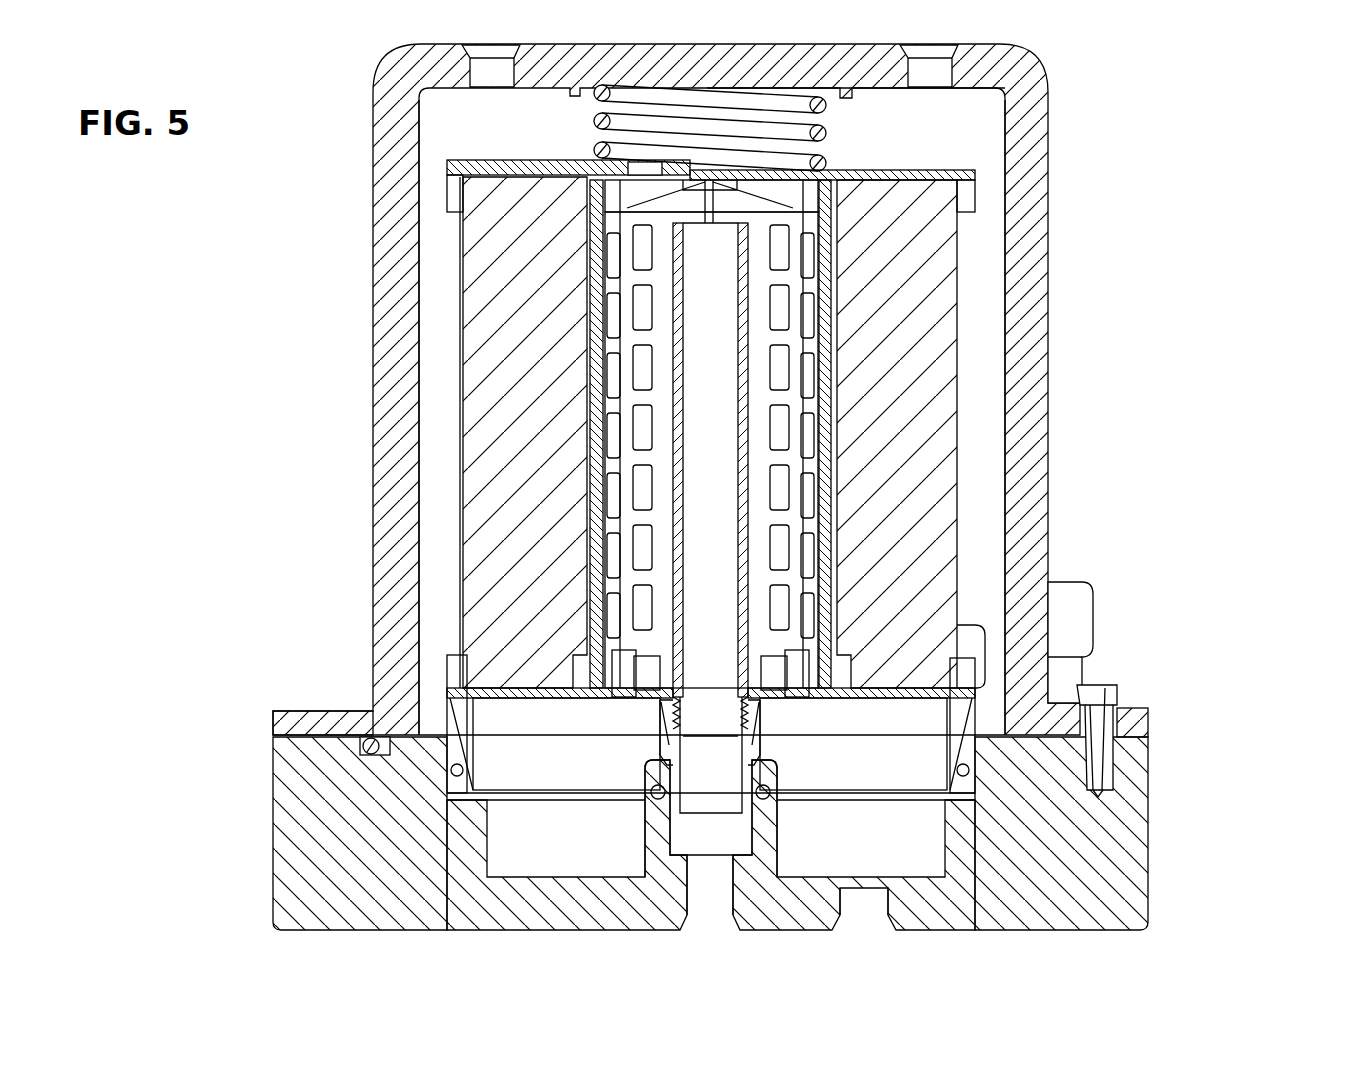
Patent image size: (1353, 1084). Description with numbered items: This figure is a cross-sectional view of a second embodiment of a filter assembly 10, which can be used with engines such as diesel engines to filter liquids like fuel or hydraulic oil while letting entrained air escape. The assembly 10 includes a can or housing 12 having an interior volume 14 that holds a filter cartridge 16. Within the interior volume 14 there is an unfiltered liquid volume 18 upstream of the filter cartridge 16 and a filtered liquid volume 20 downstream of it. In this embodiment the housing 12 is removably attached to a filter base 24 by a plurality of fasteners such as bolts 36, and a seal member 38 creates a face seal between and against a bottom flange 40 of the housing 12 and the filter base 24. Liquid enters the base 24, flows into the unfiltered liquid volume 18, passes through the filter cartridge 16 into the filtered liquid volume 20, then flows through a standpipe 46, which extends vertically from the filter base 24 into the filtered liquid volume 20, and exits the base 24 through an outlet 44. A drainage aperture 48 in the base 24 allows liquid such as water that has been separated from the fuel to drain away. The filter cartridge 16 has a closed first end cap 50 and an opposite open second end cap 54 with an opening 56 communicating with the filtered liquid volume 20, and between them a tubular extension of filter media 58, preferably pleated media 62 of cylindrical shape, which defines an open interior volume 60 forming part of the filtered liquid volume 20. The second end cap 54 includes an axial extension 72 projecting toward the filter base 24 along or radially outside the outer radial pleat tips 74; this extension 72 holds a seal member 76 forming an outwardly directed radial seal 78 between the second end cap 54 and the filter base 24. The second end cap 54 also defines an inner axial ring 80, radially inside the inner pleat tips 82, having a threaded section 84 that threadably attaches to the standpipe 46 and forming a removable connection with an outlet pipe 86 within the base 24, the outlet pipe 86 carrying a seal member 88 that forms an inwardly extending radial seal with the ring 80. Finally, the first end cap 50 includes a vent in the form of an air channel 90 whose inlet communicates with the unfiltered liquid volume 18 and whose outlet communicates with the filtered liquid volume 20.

The filter assembly 10 is at (1196, 126).
The housing 12 is at (375, 316).
The interior volume 14 is at (1000, 472).
The filter cartridge 16 is at (968, 156).
The unfiltered liquid volume 18 is at (428, 440).
The filtered liquid volume 20 is at (820, 396).
The filter base 24 is at (1132, 890).
The bolt 36 is at (1100, 742).
The seal member 38 is at (366, 745).
The bottom flange 40 is at (348, 711).
The outlet 44 is at (727, 930).
The standpipe 46 is at (690, 460).
The drainage aperture 48 is at (890, 930).
The first end cap 50 is at (873, 170).
The second end cap 54 is at (878, 698).
The opening 56 is at (683, 712).
The filter media 58 is at (480, 252).
The open interior volume 60 is at (820, 325).
The pleated media 62 is at (905, 568).
The axial extension 72 is at (957, 755).
The outer radial pleat tips 74 is at (460, 525).
The seal member 76 is at (462, 775).
The seal 78 is at (450, 770).
The inner axial ring 80 is at (760, 740).
The inner pleat tips 82 is at (612, 632).
The threaded section 84 is at (752, 706).
The outlet pipe 86 is at (777, 828).
The seal member 88 is at (660, 796).
The air channel 90 is at (645, 168).